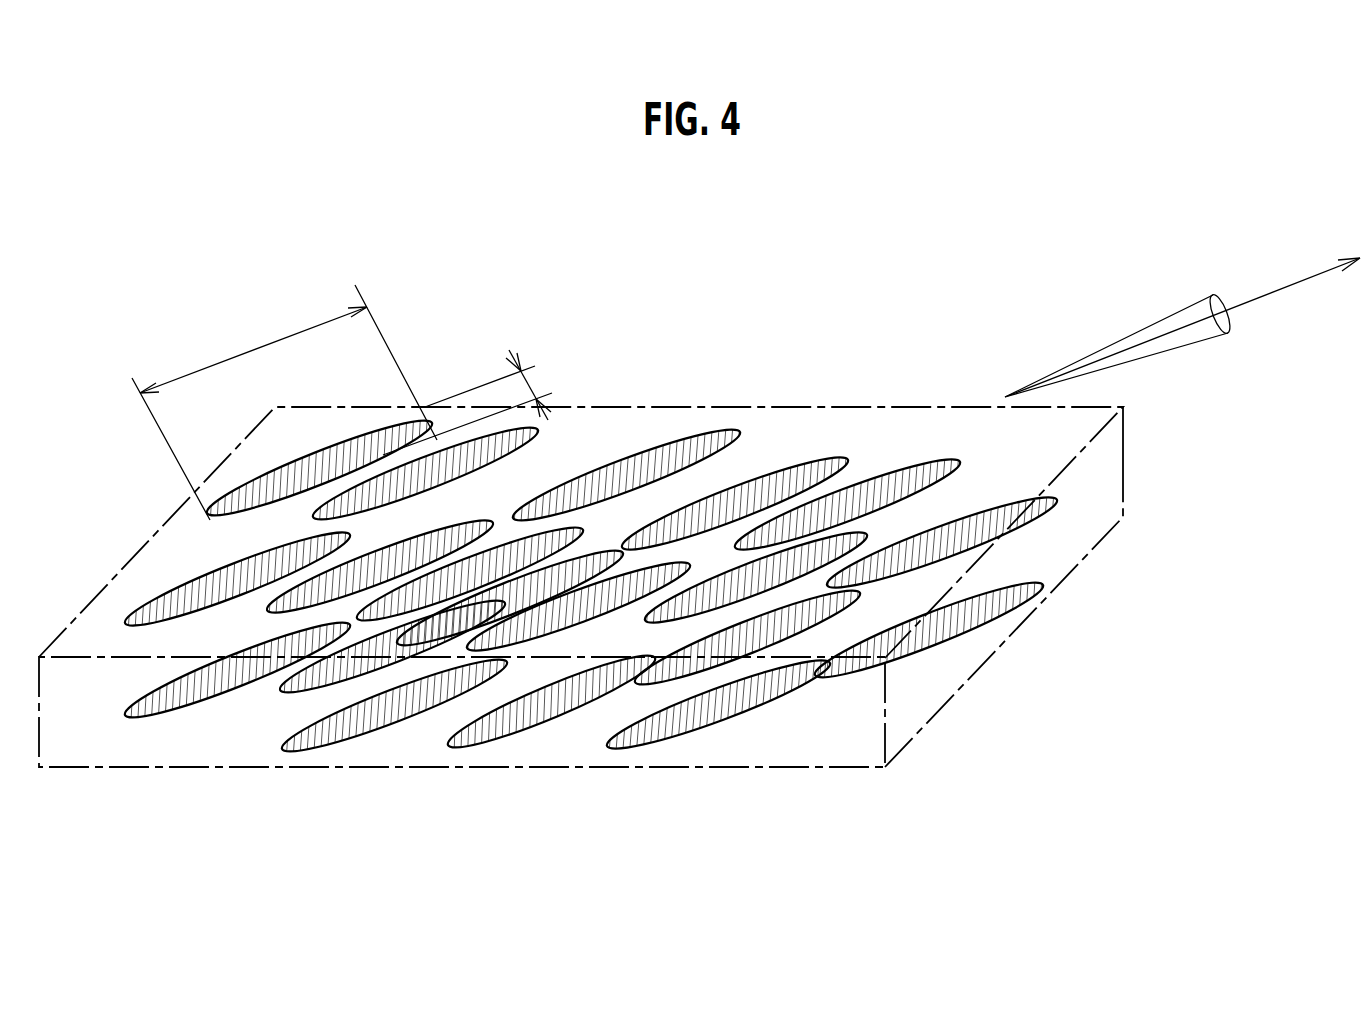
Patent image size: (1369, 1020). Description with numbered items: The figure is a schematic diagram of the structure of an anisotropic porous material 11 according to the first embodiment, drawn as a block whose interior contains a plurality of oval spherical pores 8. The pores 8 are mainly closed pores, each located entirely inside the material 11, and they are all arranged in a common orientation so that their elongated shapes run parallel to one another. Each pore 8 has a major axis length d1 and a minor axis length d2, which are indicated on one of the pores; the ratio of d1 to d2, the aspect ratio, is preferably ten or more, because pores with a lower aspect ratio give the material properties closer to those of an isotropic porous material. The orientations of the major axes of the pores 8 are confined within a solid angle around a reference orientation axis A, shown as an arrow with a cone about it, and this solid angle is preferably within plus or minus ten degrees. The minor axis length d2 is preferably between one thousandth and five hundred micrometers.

The oval spherical pore 8 is at (783, 478).
The anisotropic porous material 11 is at (1125, 455).
The reference orientation axis A is at (1283, 288).
The major axis length d1 is at (284, 402).
The minor axis length d2 is at (476, 402).